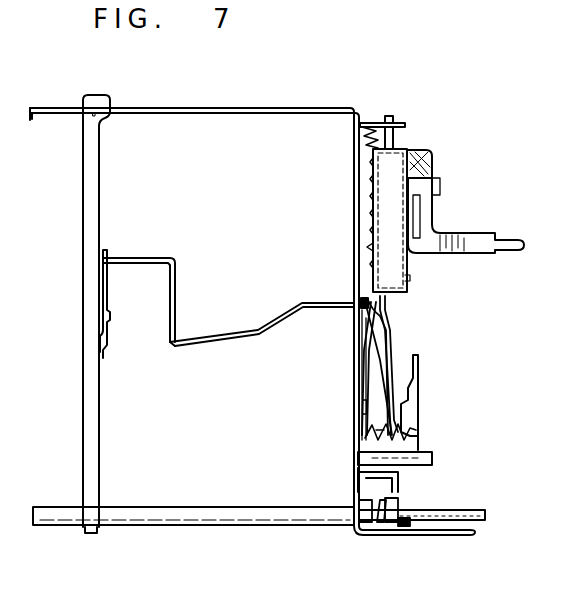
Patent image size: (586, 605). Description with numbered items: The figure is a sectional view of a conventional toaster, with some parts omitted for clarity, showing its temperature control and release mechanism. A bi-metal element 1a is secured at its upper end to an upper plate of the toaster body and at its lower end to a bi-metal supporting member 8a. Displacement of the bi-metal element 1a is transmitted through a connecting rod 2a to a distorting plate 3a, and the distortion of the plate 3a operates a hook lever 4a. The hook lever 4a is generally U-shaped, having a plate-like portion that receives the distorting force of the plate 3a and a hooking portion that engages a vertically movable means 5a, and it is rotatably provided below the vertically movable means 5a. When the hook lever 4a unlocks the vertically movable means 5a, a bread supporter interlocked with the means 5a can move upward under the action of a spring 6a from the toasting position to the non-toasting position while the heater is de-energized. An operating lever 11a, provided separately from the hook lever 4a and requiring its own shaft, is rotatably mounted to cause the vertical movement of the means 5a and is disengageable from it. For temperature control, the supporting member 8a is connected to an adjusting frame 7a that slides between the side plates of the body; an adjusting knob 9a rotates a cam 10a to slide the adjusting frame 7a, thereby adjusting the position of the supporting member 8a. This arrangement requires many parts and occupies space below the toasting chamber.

The bi-metal element 1a is at (143, 257).
The connecting rod 2a is at (229, 337).
The distorting plate 3a is at (372, 350).
The hook lever 4a is at (418, 386).
The vertically movable means 5a is at (410, 279).
The spring 6a is at (372, 150).
The adjusting frame 7a is at (219, 508).
The bi-metal supporting member 8a is at (97, 437).
The adjusting knob 9a is at (463, 510).
The cam 10a is at (391, 500).
The operating lever 11a is at (470, 237).